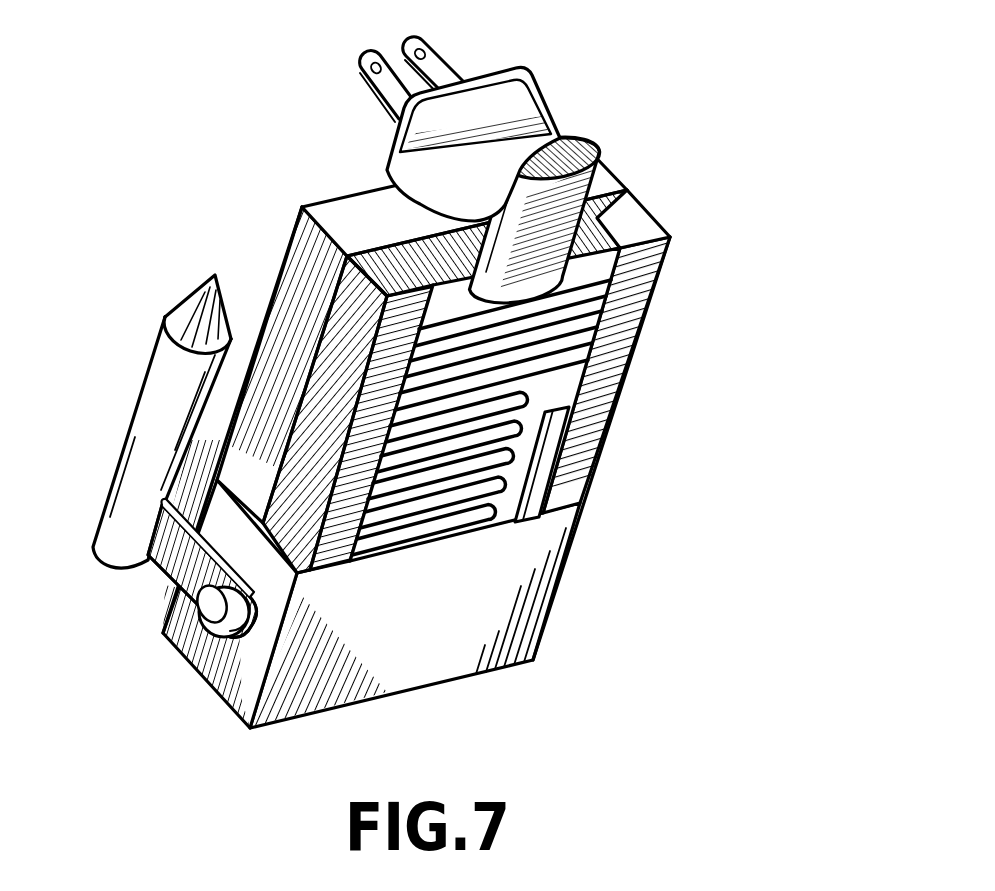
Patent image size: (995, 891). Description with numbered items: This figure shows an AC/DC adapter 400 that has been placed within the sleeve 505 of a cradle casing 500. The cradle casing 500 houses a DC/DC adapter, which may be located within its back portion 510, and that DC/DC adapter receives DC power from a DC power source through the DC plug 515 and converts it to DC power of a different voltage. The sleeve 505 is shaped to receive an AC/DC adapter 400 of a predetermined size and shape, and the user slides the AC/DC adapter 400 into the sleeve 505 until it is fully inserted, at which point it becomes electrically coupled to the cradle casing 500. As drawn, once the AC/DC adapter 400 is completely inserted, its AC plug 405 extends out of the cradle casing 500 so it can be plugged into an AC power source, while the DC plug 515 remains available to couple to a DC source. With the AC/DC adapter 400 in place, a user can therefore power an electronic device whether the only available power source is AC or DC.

The AC/DC adapter 400 is at (656, 208).
The plug 405 is at (537, 100).
The cradle casing 500 is at (607, 463).
The sleeve 505 is at (647, 321).
The back portion 510 is at (363, 213).
The DC plug 515 is at (147, 363).